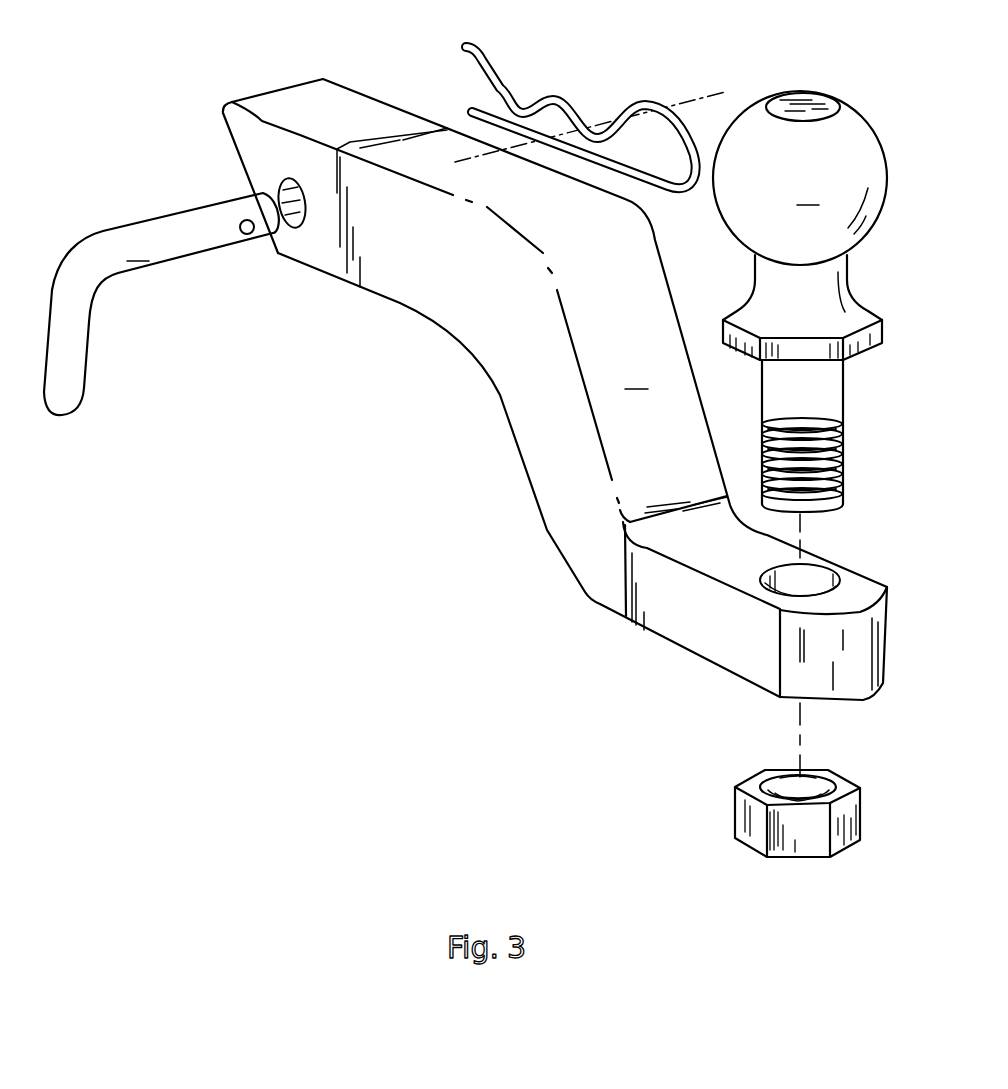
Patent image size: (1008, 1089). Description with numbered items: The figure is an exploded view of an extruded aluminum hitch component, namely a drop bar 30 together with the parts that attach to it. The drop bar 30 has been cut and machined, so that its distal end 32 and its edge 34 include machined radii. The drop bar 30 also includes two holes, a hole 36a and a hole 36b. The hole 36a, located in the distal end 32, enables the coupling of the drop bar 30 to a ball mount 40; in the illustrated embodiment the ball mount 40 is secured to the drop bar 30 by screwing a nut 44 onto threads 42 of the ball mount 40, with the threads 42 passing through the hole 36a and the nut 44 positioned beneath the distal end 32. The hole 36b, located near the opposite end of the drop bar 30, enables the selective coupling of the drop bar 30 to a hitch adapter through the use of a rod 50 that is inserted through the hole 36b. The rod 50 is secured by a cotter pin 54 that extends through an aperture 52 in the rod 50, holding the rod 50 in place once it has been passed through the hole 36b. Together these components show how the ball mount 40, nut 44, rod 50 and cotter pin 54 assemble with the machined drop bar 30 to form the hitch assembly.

The drop bar 30 is at (555, 388).
The distal end 32 is at (841, 667).
The edge 34 is at (607, 479).
The hole 36a is at (760, 582).
The hole 36b is at (293, 232).
The ball mount 40 is at (800, 225).
The threads 42 is at (843, 458).
The nut 44 is at (780, 830).
The rod 50 is at (161, 304).
The aperture 52 is at (250, 236).
The cotter pin 54 is at (570, 108).